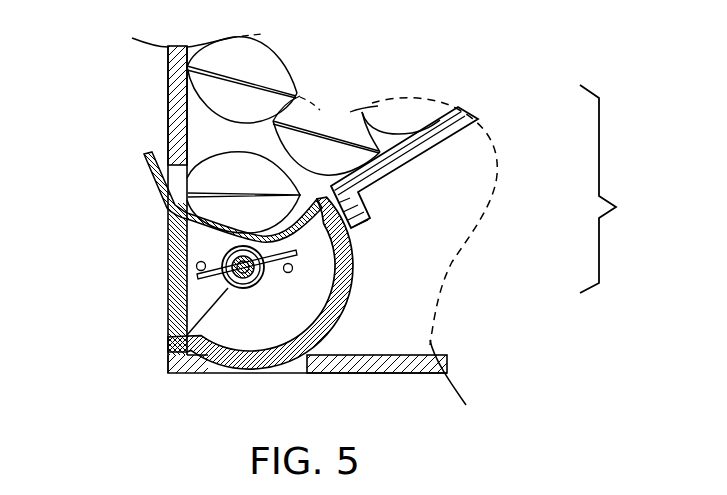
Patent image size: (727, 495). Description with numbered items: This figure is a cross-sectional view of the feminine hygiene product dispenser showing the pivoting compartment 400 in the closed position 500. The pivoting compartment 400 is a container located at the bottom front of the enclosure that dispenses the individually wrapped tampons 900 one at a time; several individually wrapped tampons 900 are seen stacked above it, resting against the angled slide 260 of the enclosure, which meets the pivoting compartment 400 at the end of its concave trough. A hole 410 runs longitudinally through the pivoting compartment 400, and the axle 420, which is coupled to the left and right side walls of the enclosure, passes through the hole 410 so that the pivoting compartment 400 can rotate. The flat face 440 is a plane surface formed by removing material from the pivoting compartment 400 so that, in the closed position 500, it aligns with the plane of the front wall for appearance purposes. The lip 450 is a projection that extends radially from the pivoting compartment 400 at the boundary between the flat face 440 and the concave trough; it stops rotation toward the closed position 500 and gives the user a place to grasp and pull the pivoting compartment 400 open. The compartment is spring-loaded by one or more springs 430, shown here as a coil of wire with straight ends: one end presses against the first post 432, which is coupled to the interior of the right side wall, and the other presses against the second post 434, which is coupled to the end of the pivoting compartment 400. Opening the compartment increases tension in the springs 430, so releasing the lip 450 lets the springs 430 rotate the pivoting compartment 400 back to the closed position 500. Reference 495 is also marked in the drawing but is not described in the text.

The individually wrapped tampons 900 is at (232, 182).
The lip 450 is at (147, 153).
The axle 420 is at (223, 262).
The second post 434 is at (196, 266).
The flat face 440 is at (168, 300).
The hole 410 is at (168, 349).
The pivoting compartment 400 is at (240, 373).
The springs 430 is at (247, 289).
The gap 495 is at (291, 198).
The angled slide 260 is at (425, 150).
The first post 432 is at (293, 266).
The closed position 500 is at (521, 245).